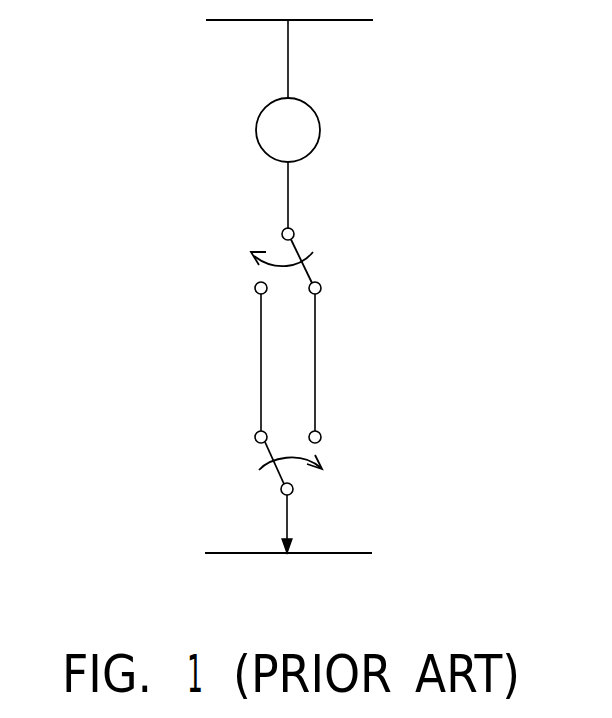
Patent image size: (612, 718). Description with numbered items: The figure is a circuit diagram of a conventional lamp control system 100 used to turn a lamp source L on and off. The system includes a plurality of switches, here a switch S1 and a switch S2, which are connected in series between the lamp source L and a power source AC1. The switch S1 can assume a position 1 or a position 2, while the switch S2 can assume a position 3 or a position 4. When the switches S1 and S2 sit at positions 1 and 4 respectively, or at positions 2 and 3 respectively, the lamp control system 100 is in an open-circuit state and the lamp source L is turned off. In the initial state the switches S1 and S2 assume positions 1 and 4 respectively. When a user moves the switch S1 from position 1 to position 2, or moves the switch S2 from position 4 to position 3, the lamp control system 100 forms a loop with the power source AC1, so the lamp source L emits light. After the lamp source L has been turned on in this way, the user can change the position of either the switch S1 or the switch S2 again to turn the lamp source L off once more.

The lamp control system 100 is at (86, 50).
The lamp source L is at (288, 163).
The power source AC1 is at (202, 254).
The switch S1 is at (316, 265).
The switch S2 is at (320, 468).
The position 1 is at (323, 351).
The position 2 is at (248, 351).
The position 3 is at (324, 437).
The position 4 is at (248, 437).